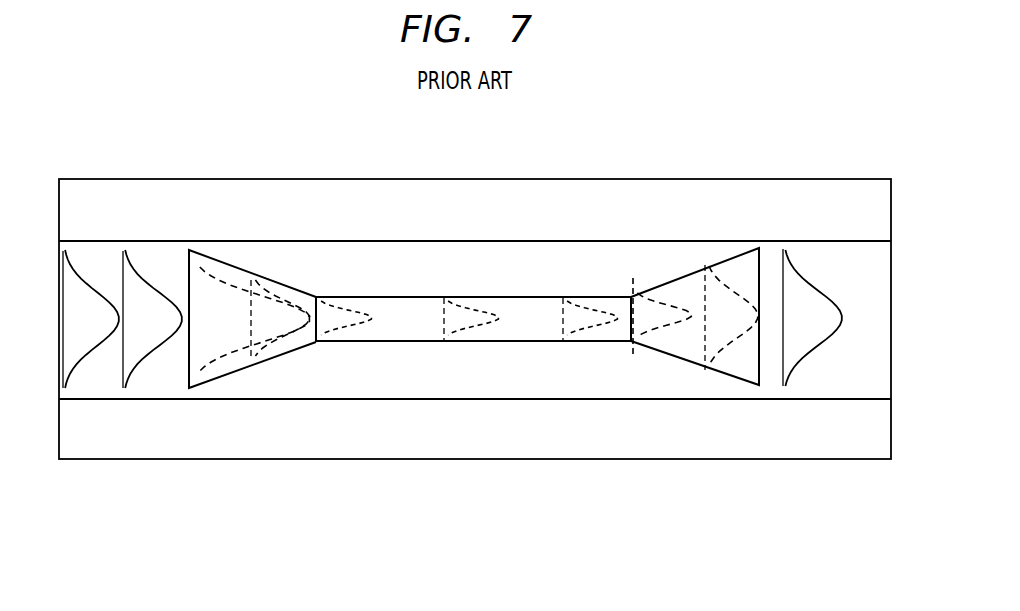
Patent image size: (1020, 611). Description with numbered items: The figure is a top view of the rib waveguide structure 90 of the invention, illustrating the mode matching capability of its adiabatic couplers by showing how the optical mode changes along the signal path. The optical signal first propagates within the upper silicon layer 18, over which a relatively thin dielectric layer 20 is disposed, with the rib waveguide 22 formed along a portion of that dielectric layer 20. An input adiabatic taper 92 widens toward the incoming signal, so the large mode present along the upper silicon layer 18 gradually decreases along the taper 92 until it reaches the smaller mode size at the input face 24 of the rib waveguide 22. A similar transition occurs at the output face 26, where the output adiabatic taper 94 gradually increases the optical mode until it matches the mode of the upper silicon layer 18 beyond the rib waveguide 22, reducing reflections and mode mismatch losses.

The rib waveguide structure 90 is at (187, 503).
The dielectric layer 20 is at (500, 188).
The upper silicon layer 18 is at (437, 375).
The rib waveguide 22 is at (402, 305).
The input face 24 is at (310, 343).
The output face 26 is at (635, 328).
The input adiabatic taper 92 is at (212, 268).
The output adiabatic taper 94 is at (733, 360).